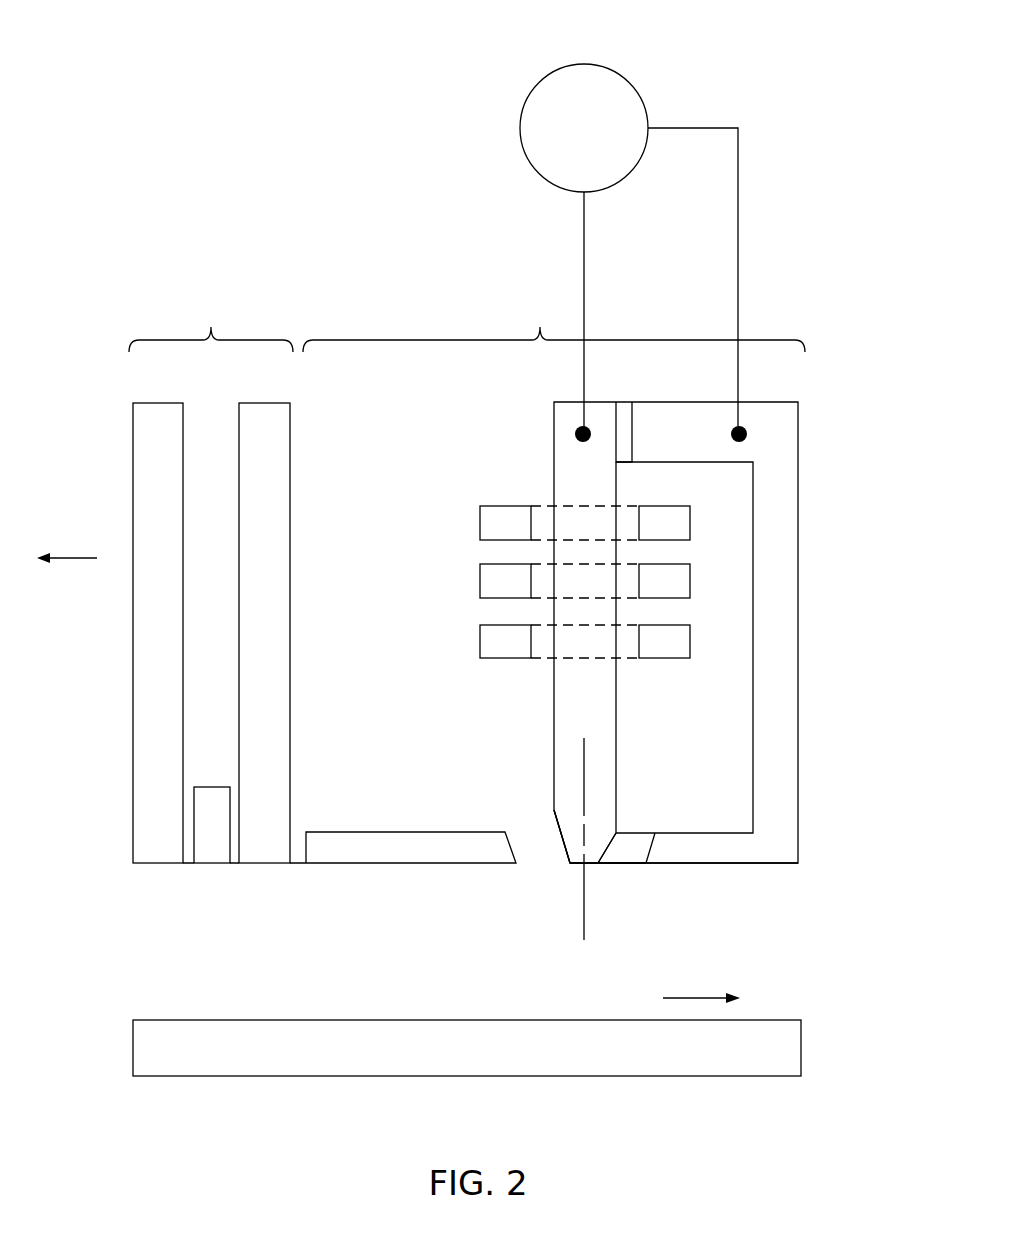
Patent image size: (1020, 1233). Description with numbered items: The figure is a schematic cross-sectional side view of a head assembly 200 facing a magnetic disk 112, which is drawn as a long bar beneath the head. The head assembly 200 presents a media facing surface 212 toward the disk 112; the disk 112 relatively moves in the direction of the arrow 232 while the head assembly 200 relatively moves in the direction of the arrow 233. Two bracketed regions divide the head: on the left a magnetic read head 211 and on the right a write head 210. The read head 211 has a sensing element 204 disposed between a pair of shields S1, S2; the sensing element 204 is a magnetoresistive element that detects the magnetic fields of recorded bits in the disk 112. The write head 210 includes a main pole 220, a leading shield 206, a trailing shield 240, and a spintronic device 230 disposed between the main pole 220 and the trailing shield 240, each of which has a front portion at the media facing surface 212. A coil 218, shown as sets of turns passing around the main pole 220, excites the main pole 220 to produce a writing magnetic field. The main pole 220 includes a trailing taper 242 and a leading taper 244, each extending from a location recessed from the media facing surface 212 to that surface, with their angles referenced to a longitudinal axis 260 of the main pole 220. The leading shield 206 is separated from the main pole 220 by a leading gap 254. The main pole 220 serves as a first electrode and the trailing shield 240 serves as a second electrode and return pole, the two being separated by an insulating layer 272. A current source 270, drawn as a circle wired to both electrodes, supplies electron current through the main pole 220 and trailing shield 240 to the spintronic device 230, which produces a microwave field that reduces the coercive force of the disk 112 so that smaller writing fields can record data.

The head assembly 200 is at (162, 222).
The current source 270 is at (607, 65).
The insulating layer 272 is at (630, 427).
The magnetic read head 211 is at (211, 320).
The write head 210 is at (554, 320).
The shield S1 is at (152, 852).
The shield S2 is at (262, 852).
The sensing element 204 is at (216, 853).
The leading shield 206 is at (350, 863).
The arrow 233 is at (88, 558).
The trailing shield 240 is at (768, 848).
The main pole 220 is at (598, 697).
The coil 218 is at (498, 658).
The leading taper 244 is at (552, 826).
The trailing taper 242 is at (615, 812).
The spintronic device 230 is at (627, 853).
The leading gap 254 is at (547, 847).
The longitudinal axis 260 is at (584, 932).
The media facing surface 212 is at (690, 863).
The arrow 232 is at (692, 995).
The magnetic disk 112 is at (801, 1046).